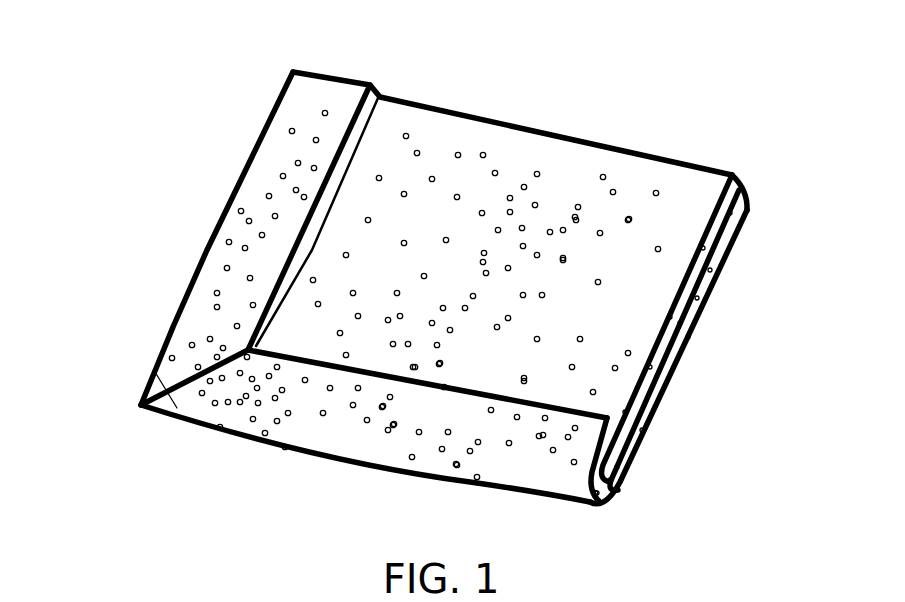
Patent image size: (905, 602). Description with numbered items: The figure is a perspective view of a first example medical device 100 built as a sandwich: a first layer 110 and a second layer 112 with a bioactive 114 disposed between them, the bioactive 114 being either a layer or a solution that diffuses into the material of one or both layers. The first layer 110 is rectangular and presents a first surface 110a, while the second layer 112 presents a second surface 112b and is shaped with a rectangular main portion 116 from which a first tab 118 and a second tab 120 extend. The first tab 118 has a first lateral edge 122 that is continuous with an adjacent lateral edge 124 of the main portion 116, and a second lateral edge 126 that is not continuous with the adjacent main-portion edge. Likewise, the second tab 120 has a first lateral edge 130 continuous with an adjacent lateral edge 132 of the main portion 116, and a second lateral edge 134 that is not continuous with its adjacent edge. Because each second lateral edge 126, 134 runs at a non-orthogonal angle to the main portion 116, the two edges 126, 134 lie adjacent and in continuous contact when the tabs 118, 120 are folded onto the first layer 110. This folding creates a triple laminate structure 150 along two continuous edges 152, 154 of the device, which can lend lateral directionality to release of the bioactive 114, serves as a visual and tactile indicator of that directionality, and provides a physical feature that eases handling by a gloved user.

The medical device 100 is at (160, 190).
The first layer 110 is at (523, 163).
The first surface 110a is at (552, 210).
The second layer 112 is at (697, 318).
The second surface 112b is at (198, 310).
The bioactive 114 is at (662, 404).
The main portion 116 is at (438, 197).
The first tab 118 is at (278, 160).
The second tab 120 is at (340, 427).
The first lateral edge 122 is at (352, 78).
The lateral edge 124 is at (420, 94).
The second lateral edge 126 is at (155, 372).
The first lateral edge 130 is at (563, 465).
The lateral edge 132 is at (657, 403).
The second lateral edge 134 is at (177, 408).
The triple laminate structure 150 is at (642, 486).
The continuous edge 152 is at (350, 490).
The continuous edge 154 is at (205, 198).